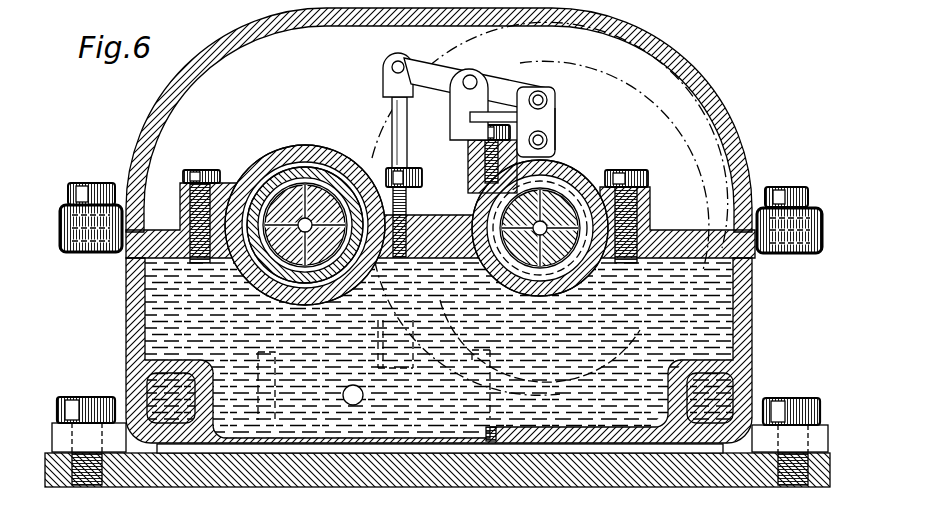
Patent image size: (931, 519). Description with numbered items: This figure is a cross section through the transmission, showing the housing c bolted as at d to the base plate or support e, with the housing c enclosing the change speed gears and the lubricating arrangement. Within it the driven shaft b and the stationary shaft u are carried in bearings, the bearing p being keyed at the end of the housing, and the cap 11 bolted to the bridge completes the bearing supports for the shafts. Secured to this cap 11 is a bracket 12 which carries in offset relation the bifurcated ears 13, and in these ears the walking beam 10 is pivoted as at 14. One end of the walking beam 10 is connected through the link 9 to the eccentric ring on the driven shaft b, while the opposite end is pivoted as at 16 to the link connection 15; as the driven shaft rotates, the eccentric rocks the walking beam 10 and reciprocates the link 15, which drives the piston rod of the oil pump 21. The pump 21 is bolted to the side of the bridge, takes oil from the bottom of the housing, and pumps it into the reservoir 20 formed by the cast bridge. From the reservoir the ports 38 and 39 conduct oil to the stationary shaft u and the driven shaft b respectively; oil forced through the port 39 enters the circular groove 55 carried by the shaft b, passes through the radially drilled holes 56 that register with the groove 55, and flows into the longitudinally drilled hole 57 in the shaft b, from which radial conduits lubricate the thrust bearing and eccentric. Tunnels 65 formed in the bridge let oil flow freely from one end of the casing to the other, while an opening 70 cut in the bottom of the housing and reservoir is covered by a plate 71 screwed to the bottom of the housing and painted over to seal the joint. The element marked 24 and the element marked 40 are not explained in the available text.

The link 9 is at (556, 122).
The walking beam 10 is at (522, 88).
The cap 11 is at (243, 162).
The bracket 12 is at (478, 134).
The bifurcated ears 13 is at (480, 78).
The pivot 14 is at (456, 80).
The link connection 15 is at (392, 114).
The pivot 16 is at (390, 62).
The reservoir 20 is at (703, 338).
The pump 21 is at (581, 430).
The partition 24 is at (491, 366).
The port 38 is at (348, 303).
The port 39 is at (440, 220).
The bearing 40 is at (276, 148).
The circular groove 55 is at (626, 172).
The holes 56 is at (564, 174).
The longitudinally drilled hole 57 is at (535, 395).
The tunnels 65 is at (113, 352).
The opening 70 is at (277, 447).
The plate 71 is at (357, 448).
The driven shaft b is at (582, 192).
The housing c is at (680, 63).
The bolts d is at (80, 396).
The base plate e is at (720, 488).
The bearing p is at (738, 300).
The stationary shaft u is at (322, 162).